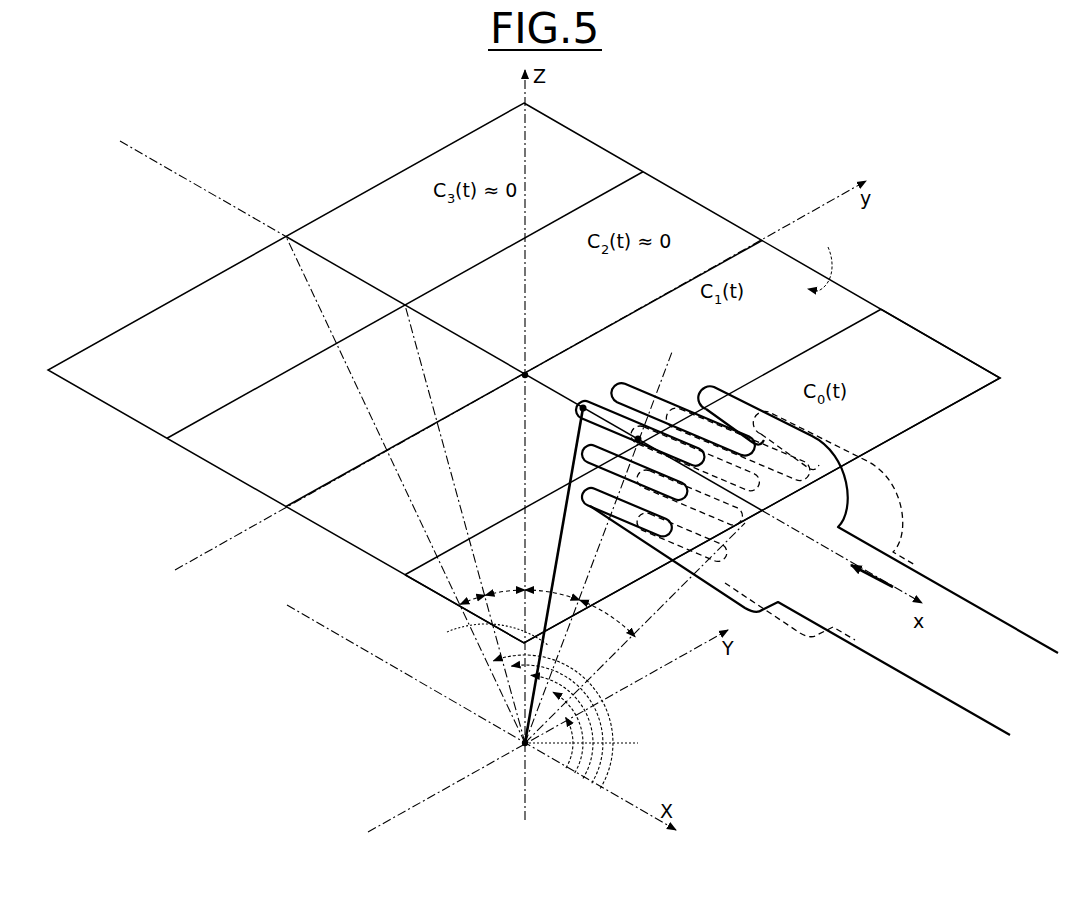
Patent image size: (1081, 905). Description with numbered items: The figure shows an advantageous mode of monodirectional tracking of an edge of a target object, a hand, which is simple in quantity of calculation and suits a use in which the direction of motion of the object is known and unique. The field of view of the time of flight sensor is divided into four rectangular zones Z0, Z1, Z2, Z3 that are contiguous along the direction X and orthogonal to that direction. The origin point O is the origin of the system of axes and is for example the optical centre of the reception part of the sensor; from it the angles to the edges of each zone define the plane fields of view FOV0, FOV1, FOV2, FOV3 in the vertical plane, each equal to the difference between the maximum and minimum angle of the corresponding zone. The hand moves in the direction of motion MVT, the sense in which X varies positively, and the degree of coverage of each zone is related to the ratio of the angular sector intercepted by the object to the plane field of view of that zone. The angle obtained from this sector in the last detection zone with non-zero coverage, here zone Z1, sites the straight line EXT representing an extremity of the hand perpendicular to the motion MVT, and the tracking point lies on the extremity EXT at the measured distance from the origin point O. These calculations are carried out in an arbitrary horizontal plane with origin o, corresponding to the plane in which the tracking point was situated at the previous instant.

The zone Z0 is at (702, 476).
The zone Z1 is at (643, 437).
The zone Z2 is at (524, 369).
The zone Z3 is at (405, 298).
The origin point O is at (525, 747).
The origin of the arbitrary horizontal plane o is at (523, 372).
The motion of the target object MVT is at (872, 577).
The extremity straight line EXT is at (826, 257).
The plane field of view of zone Z0 FOV0 is at (622, 625).
The plane field of view of zone Z1 FOV1 is at (554, 564).
The plane field of view of zone Z2 FOV2 is at (497, 590).
The plane field of view of zone Z3 FOV3 is at (458, 600).